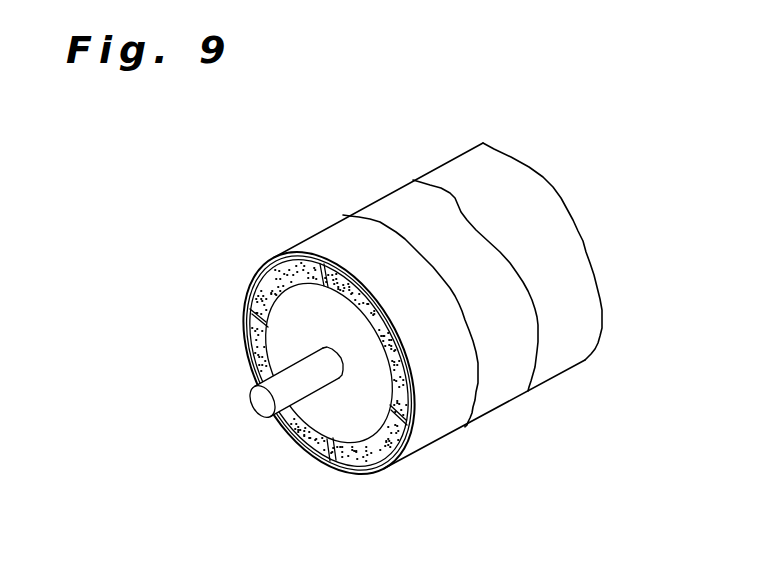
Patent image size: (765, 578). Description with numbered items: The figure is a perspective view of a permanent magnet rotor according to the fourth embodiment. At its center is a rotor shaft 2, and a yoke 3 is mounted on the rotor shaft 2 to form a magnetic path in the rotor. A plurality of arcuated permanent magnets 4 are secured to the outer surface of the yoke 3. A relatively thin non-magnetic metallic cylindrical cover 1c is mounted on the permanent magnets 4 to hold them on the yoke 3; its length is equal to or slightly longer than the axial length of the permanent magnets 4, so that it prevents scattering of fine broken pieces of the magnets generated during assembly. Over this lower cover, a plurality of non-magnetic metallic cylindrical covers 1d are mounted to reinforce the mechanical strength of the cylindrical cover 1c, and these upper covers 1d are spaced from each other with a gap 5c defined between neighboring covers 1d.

The non-magnetic metallic cylindrical cover 1c is at (272, 257).
The non-magnetic metallic cylindrical covers 1d is at (337, 231).
The gap 5c is at (453, 189).
The rotor shaft 2 is at (258, 400).
The yoke 3 is at (341, 417).
The arcuated permanent magnets 4 is at (383, 438).